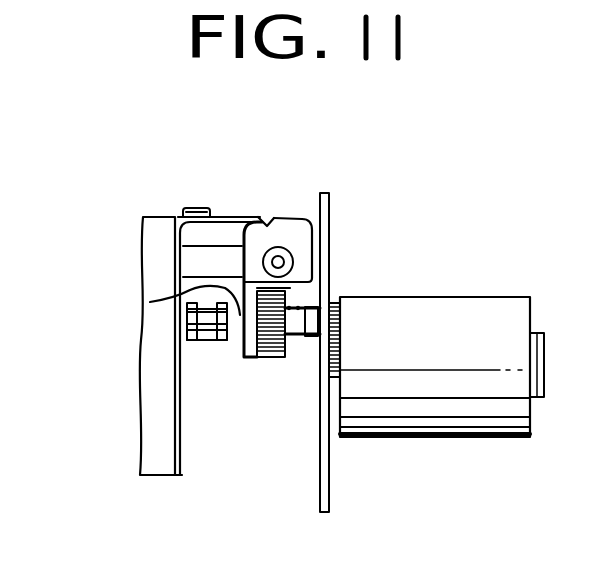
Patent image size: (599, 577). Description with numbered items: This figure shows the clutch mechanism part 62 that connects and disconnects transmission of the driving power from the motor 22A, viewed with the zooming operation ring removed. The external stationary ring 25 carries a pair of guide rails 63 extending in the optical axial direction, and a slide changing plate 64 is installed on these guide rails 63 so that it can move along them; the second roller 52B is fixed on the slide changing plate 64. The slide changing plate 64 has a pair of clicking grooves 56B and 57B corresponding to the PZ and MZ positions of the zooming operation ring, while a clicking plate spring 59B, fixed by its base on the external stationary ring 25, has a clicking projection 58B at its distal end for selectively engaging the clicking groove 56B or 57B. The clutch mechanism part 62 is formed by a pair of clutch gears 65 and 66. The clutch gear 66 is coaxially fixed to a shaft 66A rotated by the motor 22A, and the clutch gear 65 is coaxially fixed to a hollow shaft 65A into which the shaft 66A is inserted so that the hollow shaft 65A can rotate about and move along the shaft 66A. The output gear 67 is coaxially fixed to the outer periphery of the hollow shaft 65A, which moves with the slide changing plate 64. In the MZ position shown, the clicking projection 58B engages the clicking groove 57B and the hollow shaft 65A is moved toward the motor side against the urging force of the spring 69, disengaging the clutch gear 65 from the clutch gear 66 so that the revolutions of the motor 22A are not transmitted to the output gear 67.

The external stationary ring 25 is at (147, 368).
The guide rails 63 is at (190, 257).
The clicking plate spring 59B is at (233, 215).
The clicking projection 58B is at (263, 217).
The clicking groove 57B is at (276, 220).
The slide changing plate 64 is at (312, 238).
The second roller 52B is at (294, 263).
The output gear 67 is at (270, 357).
The spring 69 is at (295, 343).
The clicking groove 56B is at (300, 228).
The motor 22A is at (483, 310).
The clutch mechanism part 62 is at (418, 203).
The hollow shaft 65A is at (150, 302).
The clutch gear 65 is at (229, 338).
The clutch gear 66 is at (199, 343).
The shaft 66A is at (203, 343).